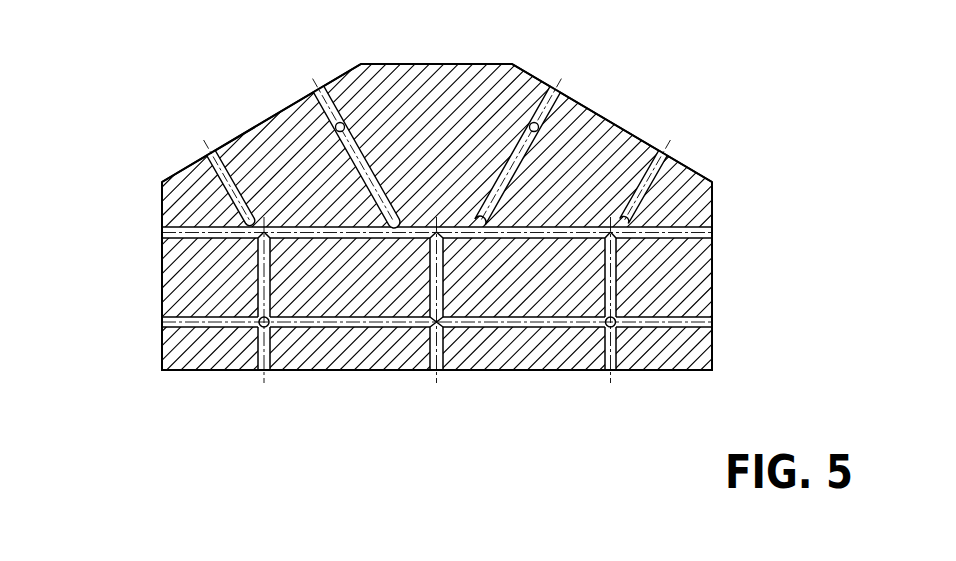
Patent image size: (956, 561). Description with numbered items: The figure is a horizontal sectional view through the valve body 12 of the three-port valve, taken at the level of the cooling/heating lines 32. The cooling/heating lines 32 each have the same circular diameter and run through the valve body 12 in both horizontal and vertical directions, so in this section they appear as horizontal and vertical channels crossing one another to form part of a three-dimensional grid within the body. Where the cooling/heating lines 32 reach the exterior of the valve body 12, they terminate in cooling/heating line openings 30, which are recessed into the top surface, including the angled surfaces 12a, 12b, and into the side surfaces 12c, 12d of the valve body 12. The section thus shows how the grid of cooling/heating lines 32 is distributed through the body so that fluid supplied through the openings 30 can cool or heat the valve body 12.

The valve body 12 is at (153, 80).
The top surface 12a is at (258, 125).
The top surface 12b is at (580, 105).
The side surface 12c is at (162, 272).
The side surface 12d is at (712, 265).
The cooling/heating line opening 30 is at (321, 88).
The cooling/heating line 32 is at (213, 180).